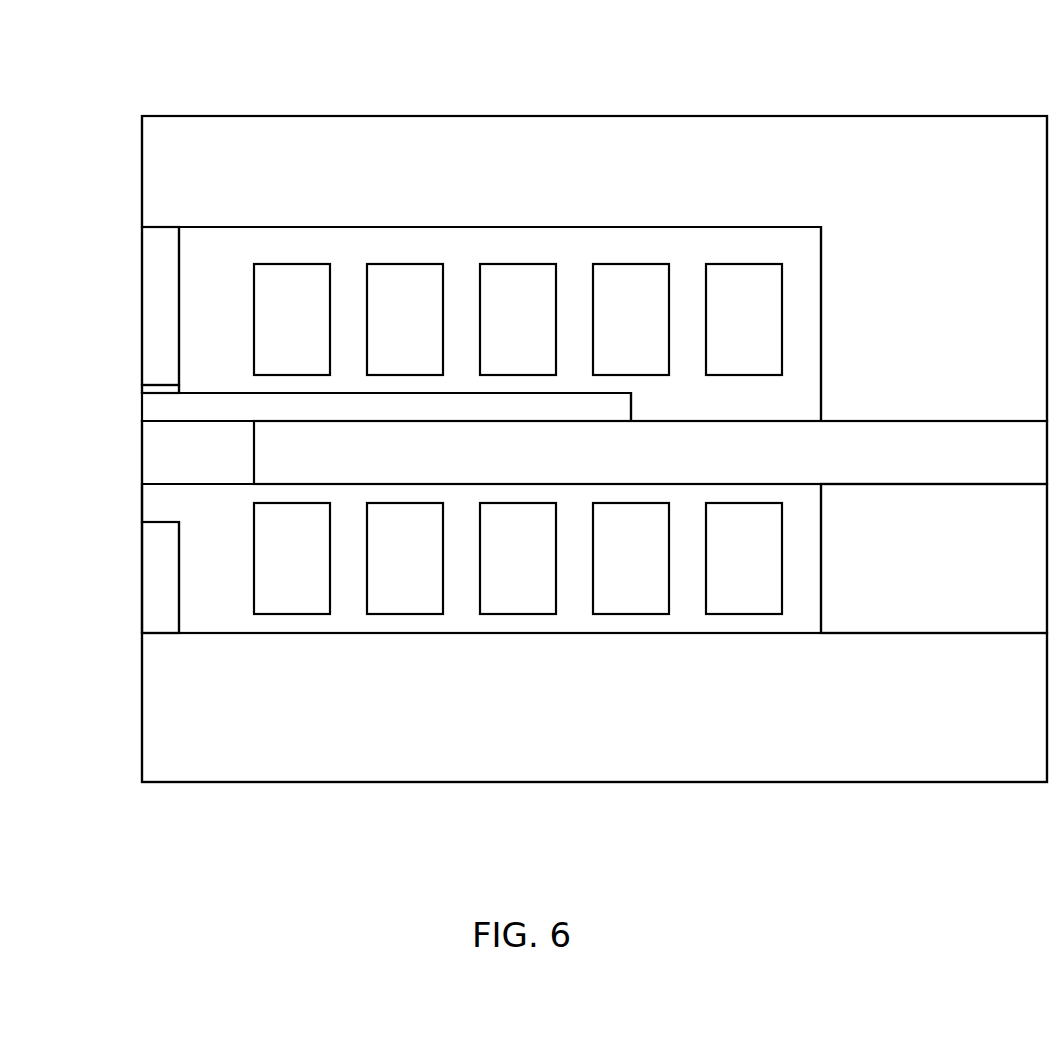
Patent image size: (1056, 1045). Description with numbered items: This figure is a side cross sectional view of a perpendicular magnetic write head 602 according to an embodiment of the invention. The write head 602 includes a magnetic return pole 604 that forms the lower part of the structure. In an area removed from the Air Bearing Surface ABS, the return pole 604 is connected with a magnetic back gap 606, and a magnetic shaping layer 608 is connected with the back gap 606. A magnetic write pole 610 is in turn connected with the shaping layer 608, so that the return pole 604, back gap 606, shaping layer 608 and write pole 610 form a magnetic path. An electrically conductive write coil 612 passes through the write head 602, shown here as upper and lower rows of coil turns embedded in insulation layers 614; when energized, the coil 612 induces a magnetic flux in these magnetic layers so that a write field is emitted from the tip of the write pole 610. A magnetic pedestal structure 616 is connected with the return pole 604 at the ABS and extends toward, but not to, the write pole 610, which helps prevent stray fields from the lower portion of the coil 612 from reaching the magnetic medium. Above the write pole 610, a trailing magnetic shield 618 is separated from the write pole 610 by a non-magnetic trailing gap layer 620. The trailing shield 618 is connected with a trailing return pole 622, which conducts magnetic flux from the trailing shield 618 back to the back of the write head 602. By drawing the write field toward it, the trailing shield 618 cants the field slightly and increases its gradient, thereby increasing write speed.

The write head 602 is at (806, 110).
The magnetic return pole 604 is at (633, 708).
The magnetic back gap 606 is at (980, 557).
The magnetic shaping layer 608 is at (693, 451).
The magnetic write pole 610 is at (242, 408).
The electrically conductive write coil 612 is at (324, 321).
The insulation layer 614 is at (555, 240).
The magnetic pedestal structure 616 is at (153, 587).
The trailing magnetic shield 618 is at (156, 285).
The non-magnetic trailing gap layer 620 is at (150, 388).
The trailing return pole 622 is at (538, 170).
The Air Bearing Surface ABS is at (140, 467).